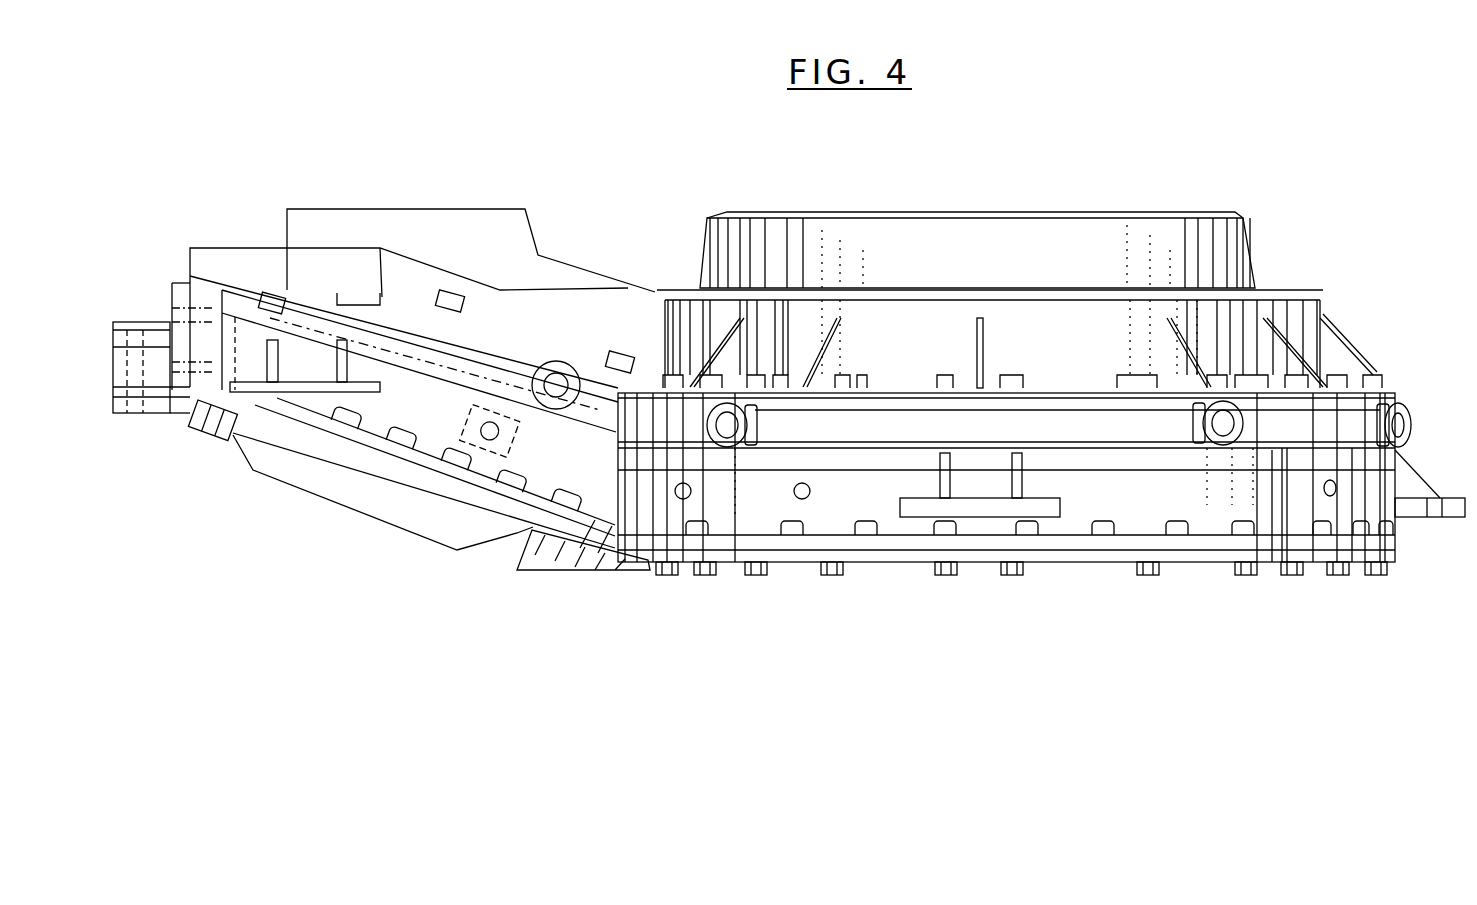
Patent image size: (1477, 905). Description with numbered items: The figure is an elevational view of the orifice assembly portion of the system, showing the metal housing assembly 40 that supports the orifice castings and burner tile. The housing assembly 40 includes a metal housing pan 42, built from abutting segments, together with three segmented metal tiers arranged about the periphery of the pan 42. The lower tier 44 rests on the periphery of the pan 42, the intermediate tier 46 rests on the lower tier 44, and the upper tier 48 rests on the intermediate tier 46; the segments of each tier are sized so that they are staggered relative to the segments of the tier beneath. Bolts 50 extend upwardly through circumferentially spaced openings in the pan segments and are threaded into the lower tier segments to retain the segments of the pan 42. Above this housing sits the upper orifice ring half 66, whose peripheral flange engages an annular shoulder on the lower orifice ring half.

The metal housing assembly 40 is at (1334, 314).
The metal housing pan 42 is at (1218, 558).
The lower tier 44 is at (1402, 478).
The intermediate tier 46 is at (1362, 418).
The upper tier 48 is at (1333, 356).
The bolts 50 is at (1378, 573).
The upper orifice ring half 66 is at (1243, 254).